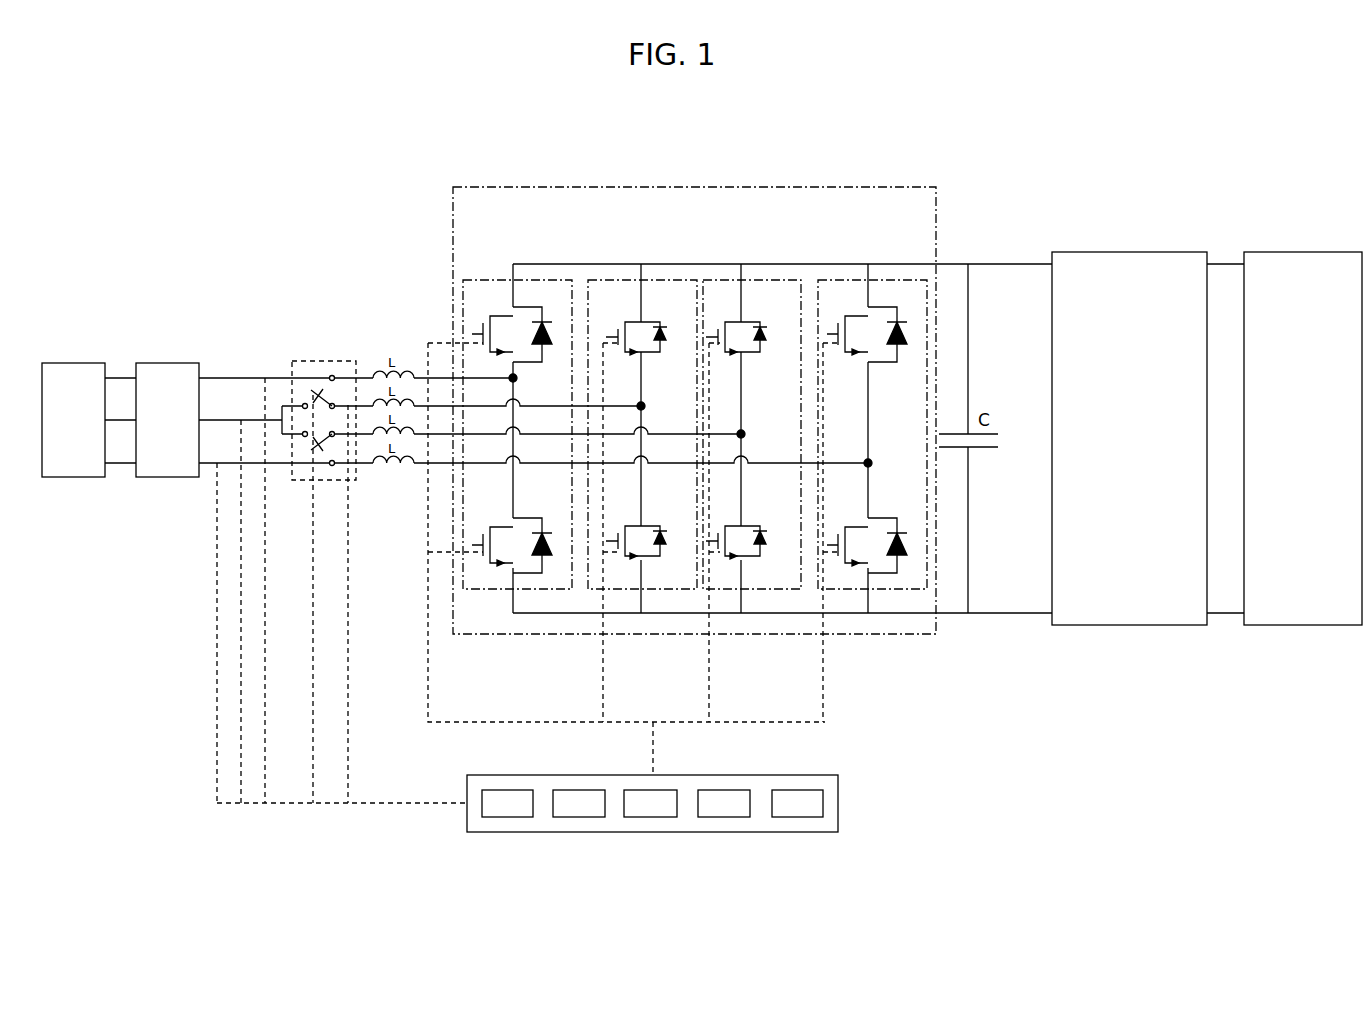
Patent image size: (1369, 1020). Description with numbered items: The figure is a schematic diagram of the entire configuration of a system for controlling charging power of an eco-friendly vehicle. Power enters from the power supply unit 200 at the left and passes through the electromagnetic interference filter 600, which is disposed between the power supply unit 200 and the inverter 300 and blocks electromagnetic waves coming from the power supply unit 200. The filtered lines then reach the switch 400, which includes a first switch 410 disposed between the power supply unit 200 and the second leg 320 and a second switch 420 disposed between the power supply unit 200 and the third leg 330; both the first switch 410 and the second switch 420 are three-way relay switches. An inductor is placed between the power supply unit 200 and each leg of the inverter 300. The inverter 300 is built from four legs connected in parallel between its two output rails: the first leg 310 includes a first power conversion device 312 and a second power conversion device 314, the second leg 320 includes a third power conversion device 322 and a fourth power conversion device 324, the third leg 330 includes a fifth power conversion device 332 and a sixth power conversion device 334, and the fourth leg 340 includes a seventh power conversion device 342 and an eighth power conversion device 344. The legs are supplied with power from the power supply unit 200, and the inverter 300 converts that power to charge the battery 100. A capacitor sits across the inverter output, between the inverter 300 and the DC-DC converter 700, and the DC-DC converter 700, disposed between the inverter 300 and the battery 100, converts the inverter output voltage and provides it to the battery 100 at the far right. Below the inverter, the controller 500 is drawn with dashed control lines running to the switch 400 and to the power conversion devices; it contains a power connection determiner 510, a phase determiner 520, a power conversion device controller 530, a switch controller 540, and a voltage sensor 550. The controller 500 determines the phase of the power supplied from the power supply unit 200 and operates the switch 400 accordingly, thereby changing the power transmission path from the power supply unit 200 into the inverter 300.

The battery 100 is at (1300, 252).
The power supply unit 200 is at (73, 363).
The inverter 300 is at (846, 187).
The first leg 310 is at (525, 280).
The first power conversion device 312 is at (512, 334).
The second power conversion device 314 is at (512, 545).
The second leg 320 is at (658, 280).
The third power conversion device 322 is at (648, 324).
The fourth power conversion device 324 is at (648, 531).
The third leg 330 is at (757, 280).
The fifth power conversion device 332 is at (748, 324).
The sixth power conversion device 334 is at (748, 531).
The fourth leg 340 is at (880, 280).
The seventh power conversion device 342 is at (867, 334).
The eighth power conversion device 344 is at (867, 545).
The switch 400 is at (297, 352).
The first switch 410 is at (314, 388).
The second switch 420 is at (318, 453).
The controller 500 is at (838, 803).
The power connection determiner 510 is at (507, 803).
The phase determiner 520 is at (579, 803).
The power conversion device controller 530 is at (650, 803).
The switch controller 540 is at (724, 803).
The voltage sensor 550 is at (797, 803).
The electromagnetic interference filter 600 is at (168, 363).
The DC-DC converter 700 is at (1130, 252).